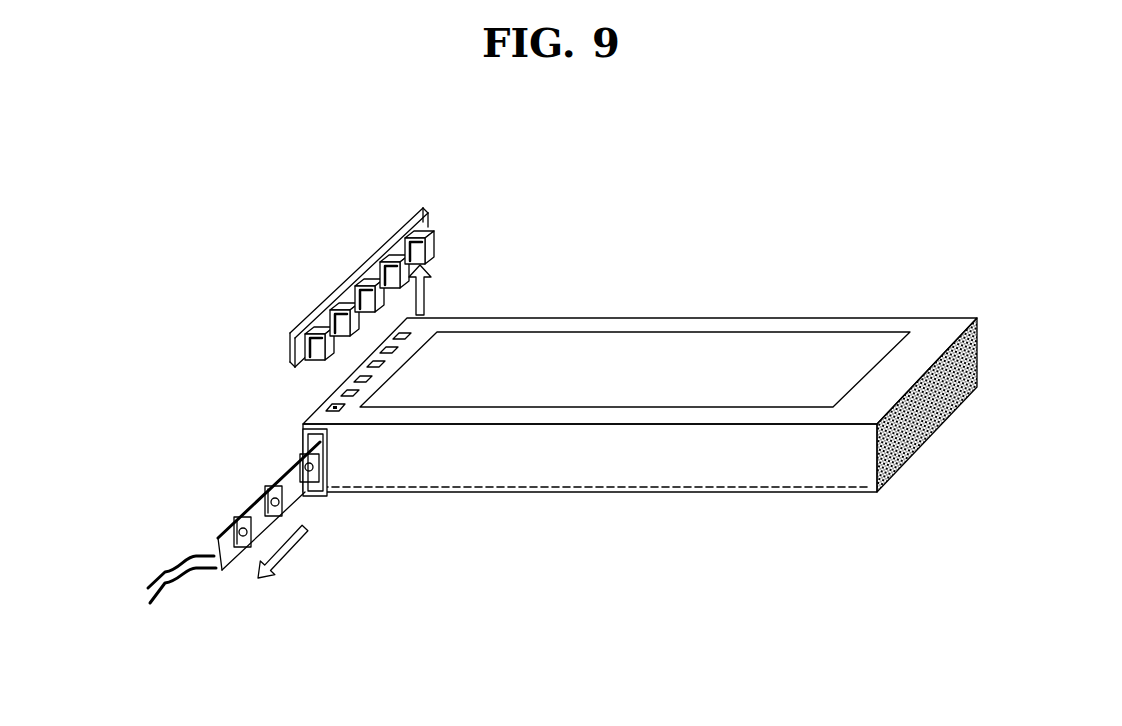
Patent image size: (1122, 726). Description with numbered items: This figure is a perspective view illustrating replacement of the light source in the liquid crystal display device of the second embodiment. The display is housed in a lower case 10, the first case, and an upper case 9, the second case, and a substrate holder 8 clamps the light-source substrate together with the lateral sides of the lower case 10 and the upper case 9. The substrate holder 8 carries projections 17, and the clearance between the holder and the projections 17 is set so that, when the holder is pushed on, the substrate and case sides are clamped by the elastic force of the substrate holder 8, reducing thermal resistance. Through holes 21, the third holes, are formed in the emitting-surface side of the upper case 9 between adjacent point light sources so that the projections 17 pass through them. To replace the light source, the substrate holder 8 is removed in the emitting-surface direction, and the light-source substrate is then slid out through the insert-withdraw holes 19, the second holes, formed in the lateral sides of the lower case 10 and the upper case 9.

The substrate holder 8 is at (353, 268).
The projections 17 is at (433, 228).
The upper case 9 is at (575, 320).
The lower case 10 is at (603, 488).
The through holes 21 is at (326, 410).
The insert-withdraw holes 19 is at (325, 490).